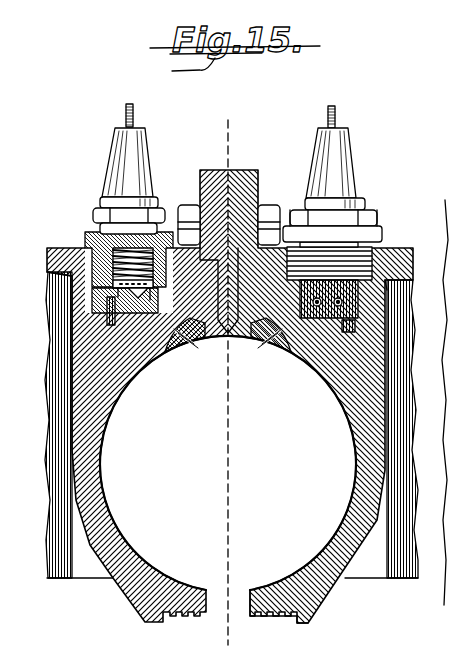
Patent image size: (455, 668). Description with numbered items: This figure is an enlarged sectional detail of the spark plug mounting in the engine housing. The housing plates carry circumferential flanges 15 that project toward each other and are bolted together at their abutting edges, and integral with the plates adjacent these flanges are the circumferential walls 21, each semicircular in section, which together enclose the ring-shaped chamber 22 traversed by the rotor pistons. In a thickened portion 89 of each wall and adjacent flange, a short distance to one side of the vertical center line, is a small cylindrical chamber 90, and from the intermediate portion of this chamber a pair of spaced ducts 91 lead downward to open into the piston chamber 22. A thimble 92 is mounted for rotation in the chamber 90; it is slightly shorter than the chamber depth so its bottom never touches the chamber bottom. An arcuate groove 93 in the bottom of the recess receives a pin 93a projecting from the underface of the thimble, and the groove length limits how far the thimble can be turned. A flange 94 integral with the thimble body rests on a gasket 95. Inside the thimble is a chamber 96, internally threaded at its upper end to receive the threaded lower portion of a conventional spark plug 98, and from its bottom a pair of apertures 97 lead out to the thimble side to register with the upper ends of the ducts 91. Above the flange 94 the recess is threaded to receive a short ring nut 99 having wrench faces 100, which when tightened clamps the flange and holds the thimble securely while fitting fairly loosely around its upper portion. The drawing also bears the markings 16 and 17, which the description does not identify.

The circumferential flange 15 is at (64, 249).
The section line 16- 16 is at (250, 120).
The view direction arrow 17 is at (274, 90).
The circumferential wall 21 is at (338, 560).
The ring-shaped chamber 22 is at (192, 467).
The thickened portion 89 is at (366, 348).
The cylindrical chamber 90 is at (125, 322).
The spaced ducts 91 is at (199, 342).
The thimble 92 is at (384, 300).
The arcuate groove 93 is at (107, 326).
The pin 93a is at (378, 304).
The flange 94 is at (96, 283).
The gasket 95 is at (390, 279).
The chamber 96 is at (74, 272).
The apertures 97 is at (121, 325).
The spark plug 98 is at (133, 162).
The ring nut 99 is at (86, 236).
The wrench faces 100 is at (322, 238).